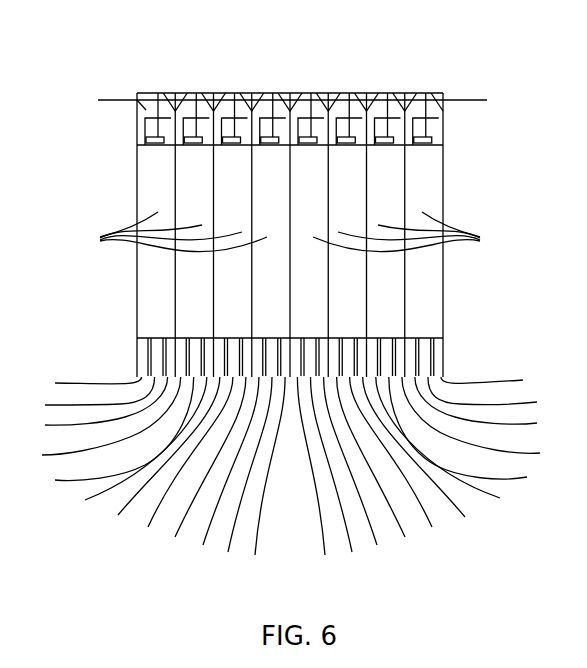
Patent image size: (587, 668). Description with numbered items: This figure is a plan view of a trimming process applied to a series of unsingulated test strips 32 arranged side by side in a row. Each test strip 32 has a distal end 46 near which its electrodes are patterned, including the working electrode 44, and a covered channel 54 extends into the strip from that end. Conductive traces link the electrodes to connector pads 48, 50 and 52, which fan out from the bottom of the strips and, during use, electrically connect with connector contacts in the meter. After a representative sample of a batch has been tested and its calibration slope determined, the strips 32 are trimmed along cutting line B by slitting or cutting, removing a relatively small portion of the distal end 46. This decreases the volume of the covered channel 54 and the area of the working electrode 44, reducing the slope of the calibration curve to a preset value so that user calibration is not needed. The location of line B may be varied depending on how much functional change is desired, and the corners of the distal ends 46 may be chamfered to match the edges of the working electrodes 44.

The test strip sensor 32 is at (290, 233).
The reference electrode 44 is at (142, 108).
The distal end 46 is at (118, 128).
The connector pad 48 is at (290, 474).
The connector pad 50 is at (290, 476).
The connector pad 52 is at (291, 474).
The covered channel 54 is at (155, 137).
The cutting line B is at (465, 100).